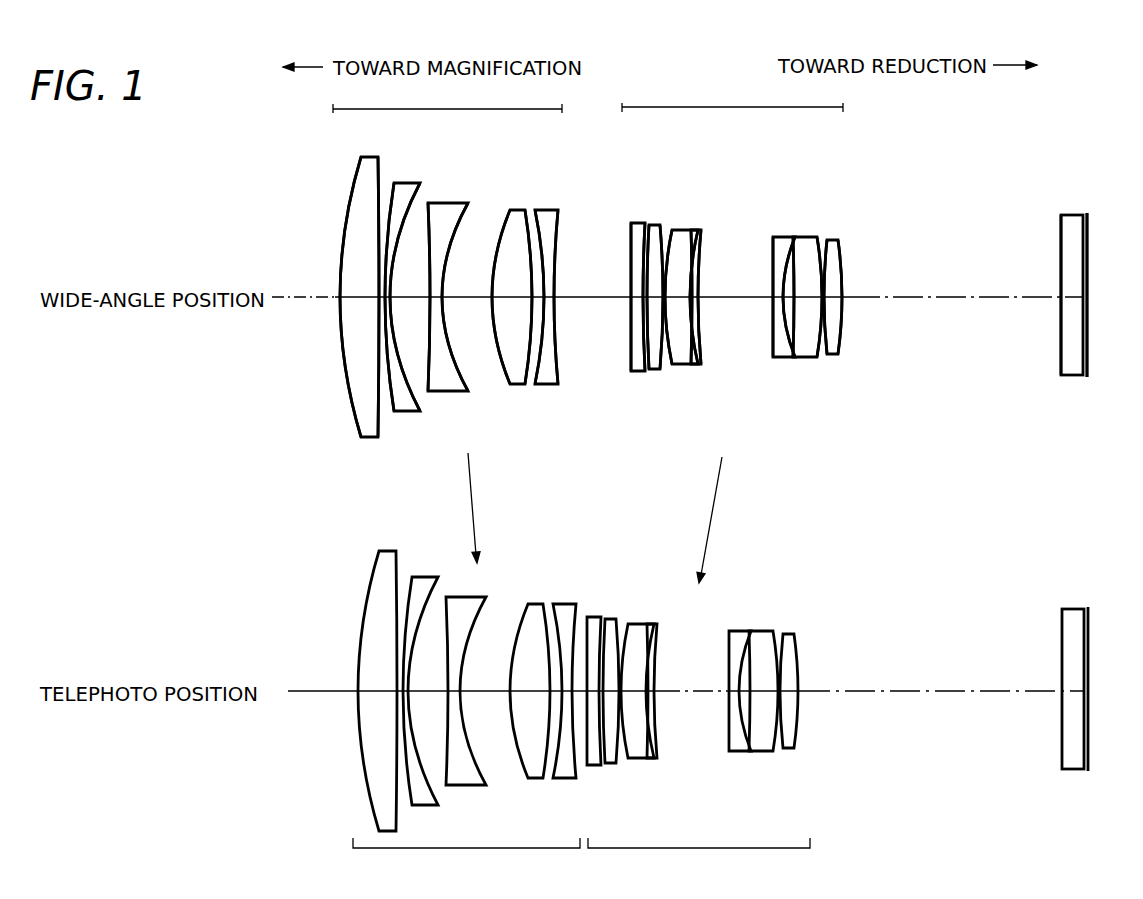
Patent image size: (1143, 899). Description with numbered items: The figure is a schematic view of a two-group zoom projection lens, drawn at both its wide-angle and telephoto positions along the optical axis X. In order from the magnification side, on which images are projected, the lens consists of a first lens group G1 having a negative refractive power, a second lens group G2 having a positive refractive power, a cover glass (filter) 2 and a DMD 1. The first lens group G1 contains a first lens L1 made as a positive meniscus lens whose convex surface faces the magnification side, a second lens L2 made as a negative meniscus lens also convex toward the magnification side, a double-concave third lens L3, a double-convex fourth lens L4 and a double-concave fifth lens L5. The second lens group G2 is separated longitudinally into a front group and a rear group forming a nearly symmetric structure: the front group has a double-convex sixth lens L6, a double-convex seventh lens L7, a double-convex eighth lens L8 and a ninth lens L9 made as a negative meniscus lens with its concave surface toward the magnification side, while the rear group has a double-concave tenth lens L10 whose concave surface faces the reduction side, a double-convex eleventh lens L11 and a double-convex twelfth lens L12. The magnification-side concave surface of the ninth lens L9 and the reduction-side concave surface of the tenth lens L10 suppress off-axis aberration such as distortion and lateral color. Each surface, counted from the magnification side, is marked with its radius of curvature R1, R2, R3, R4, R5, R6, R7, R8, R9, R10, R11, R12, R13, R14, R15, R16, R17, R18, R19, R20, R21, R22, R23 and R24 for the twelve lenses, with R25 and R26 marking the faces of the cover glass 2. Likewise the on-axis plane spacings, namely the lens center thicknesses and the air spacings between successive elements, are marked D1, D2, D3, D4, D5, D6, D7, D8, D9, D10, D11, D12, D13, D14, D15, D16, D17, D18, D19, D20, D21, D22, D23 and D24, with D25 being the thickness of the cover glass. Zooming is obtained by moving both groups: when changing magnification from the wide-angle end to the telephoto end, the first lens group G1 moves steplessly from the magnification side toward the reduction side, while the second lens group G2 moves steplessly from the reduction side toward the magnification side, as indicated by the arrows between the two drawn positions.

The DMD 1 is at (1087, 352).
The cover glass (filter) 2 is at (1072, 376).
The first lens group G1 is at (456, 484).
The second lens group G2 is at (715, 485).
The optical axis X is at (292, 302).
The first lens L1 is at (369, 438).
The second lens L2 is at (409, 413).
The third lens L3 is at (445, 392).
The fourth lens L4 is at (513, 385).
The fifth lens L5 is at (548, 385).
The sixth lens L6 is at (630, 360).
The seventh lens L7 is at (655, 366).
The eighth lens L8 is at (687, 366).
The ninth lens L9 is at (700, 359).
The tenth lens L10 is at (778, 358).
The eleventh lens L11 is at (807, 358).
The twelfth lens L12 is at (840, 349).
The lens surface radius of curvature R1 is at (347, 211).
The lens surface radius of curvature R2 is at (380, 183).
The lens surface radius of curvature R3 is at (386, 196).
The lens surface radius of curvature R4 is at (418, 222).
The lens surface radius of curvature R5 is at (429, 222).
The lens surface radius of curvature R6 is at (463, 214).
The lens surface radius of curvature R7 is at (499, 243).
The lens surface radius of curvature R8 is at (517, 210).
The lens surface radius of curvature R9 is at (538, 229).
The lens surface radius of curvature R10 is at (556, 233).
The lens surface radius of curvature R11 is at (630, 242).
The lens surface radius of curvature R12 is at (645, 222).
The lens surface radius of curvature R13 is at (648, 366).
The lens surface radius of curvature R14 is at (662, 226).
The lens surface radius of curvature R15 is at (668, 363).
The lens surface radius of curvature R16 is at (690, 230).
The lens surface radius of curvature R17 is at (700, 366).
The lens surface radius of curvature R18 is at (702, 236).
The lens surface radius of curvature R19 is at (773, 239).
The lens surface radius of curvature R20 is at (794, 237).
The lens surface radius of curvature R21 is at (790, 358).
The lens surface radius of curvature R22 is at (818, 238).
The lens surface radius of curvature R23 is at (828, 355).
The lens surface radius of curvature R24 is at (839, 240).
The surface radius of curvature R25 is at (1061, 228).
The surface radius of curvature R26 is at (1087, 228).
The on-axis plane spacing D1 is at (352, 303).
The on-axis plane spacing D2 is at (376, 290).
The on-axis plane spacing D3 is at (391, 292).
The on-axis plane spacing D4 is at (412, 301).
The on-axis plane spacing D5 is at (440, 292).
The on-axis plane spacing D6 is at (462, 302).
The on-axis plane spacing D7 is at (517, 303).
The on-axis plane spacing D8 is at (536, 290).
The on-axis plane spacing D9 is at (553, 292).
The on-axis plane spacing D10 is at (577, 303).
The on-axis plane spacing D11 is at (630, 283).
The on-axis plane spacing D12 is at (630, 307).
The on-axis plane spacing D13 is at (630, 262).
The on-axis plane spacing D14 is at (628, 322).
The on-axis plane spacing D15 is at (702, 260).
The on-axis plane spacing D16 is at (697, 320).
The on-axis plane spacing D17 is at (707, 286).
The on-axis plane spacing D18 is at (745, 302).
The on-axis plane spacing D19 is at (781, 286).
The on-axis plane spacing D20 is at (790, 292).
The on-axis plane spacing D21 is at (803, 303).
The on-axis plane spacing D22 is at (838, 310).
The on-axis plane spacing D23 is at (842, 291).
The on-axis plane spacing D24 is at (938, 302).
The on-axis plane spacing D25 is at (1066, 292).